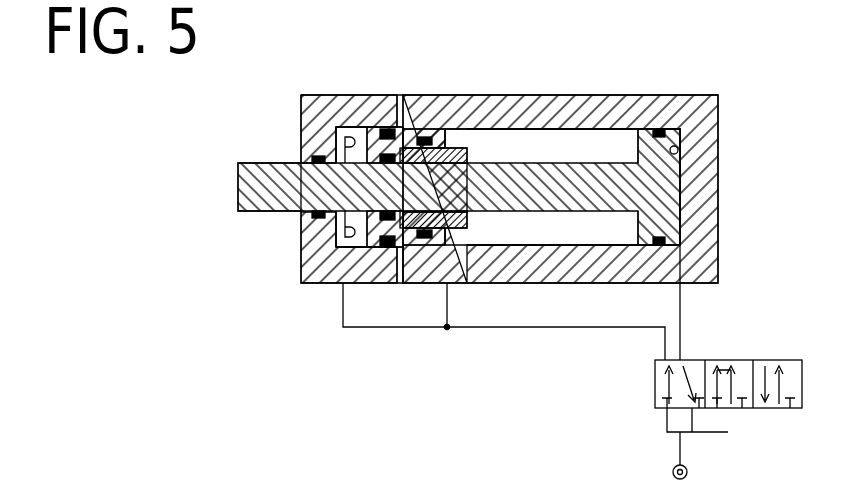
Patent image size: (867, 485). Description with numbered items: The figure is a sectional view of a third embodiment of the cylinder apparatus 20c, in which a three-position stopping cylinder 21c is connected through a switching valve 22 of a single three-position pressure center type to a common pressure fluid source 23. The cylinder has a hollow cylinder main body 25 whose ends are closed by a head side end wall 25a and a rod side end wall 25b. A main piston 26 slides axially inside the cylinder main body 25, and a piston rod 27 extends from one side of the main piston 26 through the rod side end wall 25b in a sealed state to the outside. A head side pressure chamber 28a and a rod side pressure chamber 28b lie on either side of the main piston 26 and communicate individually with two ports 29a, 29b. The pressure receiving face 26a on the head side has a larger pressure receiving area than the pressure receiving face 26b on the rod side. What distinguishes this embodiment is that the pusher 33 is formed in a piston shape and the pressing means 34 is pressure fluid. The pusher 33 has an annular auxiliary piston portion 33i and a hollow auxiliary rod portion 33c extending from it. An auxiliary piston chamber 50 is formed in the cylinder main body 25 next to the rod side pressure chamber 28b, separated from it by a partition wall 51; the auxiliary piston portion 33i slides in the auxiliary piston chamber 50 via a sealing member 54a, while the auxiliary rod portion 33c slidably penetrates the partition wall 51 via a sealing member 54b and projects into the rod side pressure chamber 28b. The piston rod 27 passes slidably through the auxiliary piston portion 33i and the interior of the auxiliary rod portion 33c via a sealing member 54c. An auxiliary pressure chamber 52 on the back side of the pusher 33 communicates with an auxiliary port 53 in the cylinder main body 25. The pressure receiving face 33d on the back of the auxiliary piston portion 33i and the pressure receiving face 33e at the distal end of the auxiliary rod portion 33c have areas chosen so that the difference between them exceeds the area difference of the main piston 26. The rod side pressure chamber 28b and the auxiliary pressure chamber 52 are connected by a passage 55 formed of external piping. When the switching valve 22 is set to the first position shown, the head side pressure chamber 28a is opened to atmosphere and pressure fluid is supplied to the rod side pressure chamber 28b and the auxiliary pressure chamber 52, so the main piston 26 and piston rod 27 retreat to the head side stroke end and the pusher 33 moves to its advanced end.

The cylinder apparatus 20c is at (724, 49).
The 3-position stopping cylinder 21c is at (587, 80).
The switching valve 22 is at (741, 359).
The pressure fluid source 23 is at (688, 472).
The cylinder main body 25 is at (614, 110).
The head side end wall 25a is at (733, 118).
The rod side end wall 25b is at (310, 113).
The main piston 26 is at (665, 180).
The head side pressure receiving face 26a is at (688, 217).
The rod side pressure receiving face 26b is at (636, 222).
The piston rod 27 is at (270, 200).
The head side pressure chamber 28a is at (692, 138).
The rod side pressure chamber 28b is at (542, 143).
The head side port 29a is at (683, 286).
The rod side port 29b is at (452, 283).
The pusher 33 is at (353, 126).
The auxiliary rod portion 33c is at (470, 128).
The back face pressure receiving face 33d is at (335, 245).
The distal end pressure receiving face 33e is at (468, 215).
The auxiliary piston portion 33i is at (369, 127).
The pressing means 34 is at (338, 127).
The auxiliary piston chamber 50 is at (343, 150).
The partition wall 51 is at (436, 129).
The auxiliary pressure chamber 52 is at (312, 230).
The auxiliary port 53 is at (348, 284).
The sealing member 54a is at (405, 283).
The sealing member 54b is at (438, 283).
The sealing member 54c is at (400, 150).
The passage 55 is at (357, 329).